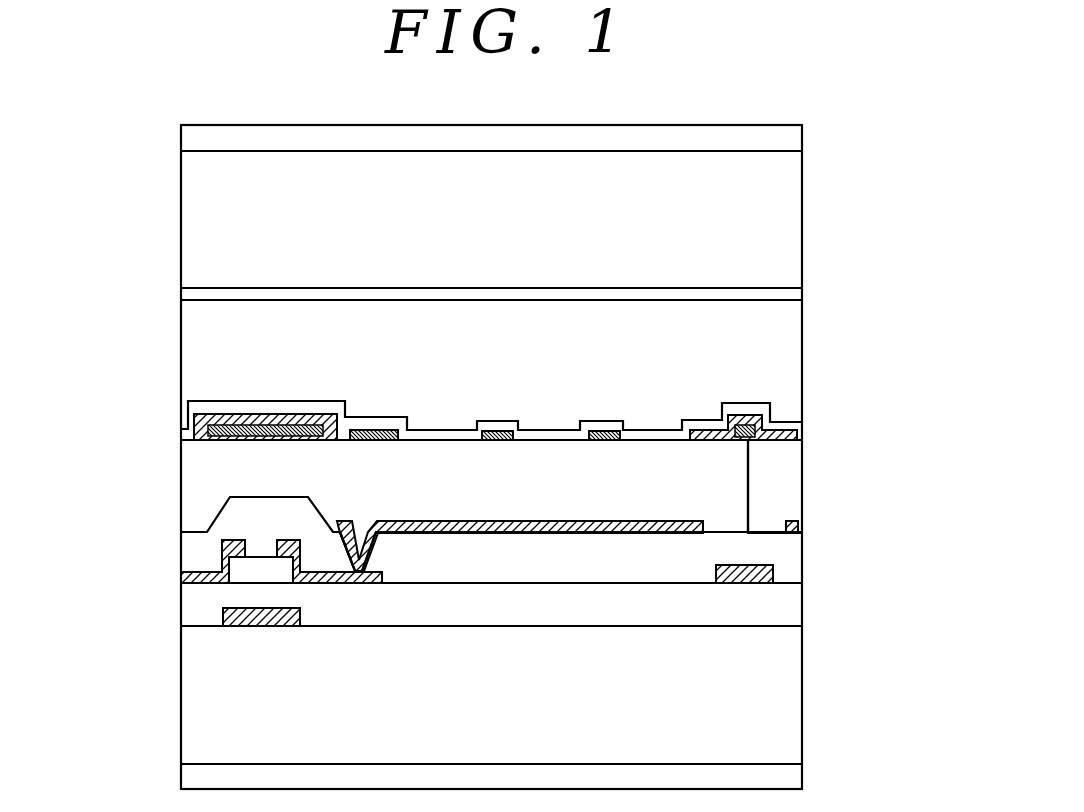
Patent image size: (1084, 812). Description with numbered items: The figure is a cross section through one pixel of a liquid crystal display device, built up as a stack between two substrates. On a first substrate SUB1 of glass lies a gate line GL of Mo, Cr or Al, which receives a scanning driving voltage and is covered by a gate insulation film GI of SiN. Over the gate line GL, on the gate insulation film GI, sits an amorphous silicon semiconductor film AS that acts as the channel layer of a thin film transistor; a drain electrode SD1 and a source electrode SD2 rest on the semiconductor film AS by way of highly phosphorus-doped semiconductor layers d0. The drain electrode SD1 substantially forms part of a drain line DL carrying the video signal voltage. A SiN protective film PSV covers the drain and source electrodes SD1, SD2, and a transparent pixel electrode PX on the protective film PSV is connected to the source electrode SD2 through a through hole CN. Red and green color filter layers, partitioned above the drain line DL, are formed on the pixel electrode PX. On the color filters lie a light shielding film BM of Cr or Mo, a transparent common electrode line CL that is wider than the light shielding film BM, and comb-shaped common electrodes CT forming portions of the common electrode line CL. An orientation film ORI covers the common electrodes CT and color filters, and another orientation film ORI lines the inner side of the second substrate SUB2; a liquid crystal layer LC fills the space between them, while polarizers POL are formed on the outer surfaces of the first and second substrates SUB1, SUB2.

The polarizer POL is at (188, 127).
The second substrate SUB2 is at (195, 219).
The first substrate SUB1 is at (195, 723).
The orientation film ORI is at (183, 428).
The liquid crystal layer LC is at (792, 322).
The light shielding film BM is at (266, 428).
The common electrode line CL is at (367, 429).
The common electrode CT is at (602, 430).
The protective film PSV is at (790, 548).
The pixel electrode PX is at (541, 521).
The through hole CN is at (357, 530).
The drain electrode SD1 is at (182, 578).
The source electrode SD2 is at (357, 583).
The semiconductor film AS is at (245, 580).
The semiconductor layer doped with phosphorus d0 is at (276, 556).
The gate line GL is at (223, 616).
The drain line DL is at (773, 574).
The gate insulation film GI is at (782, 608).